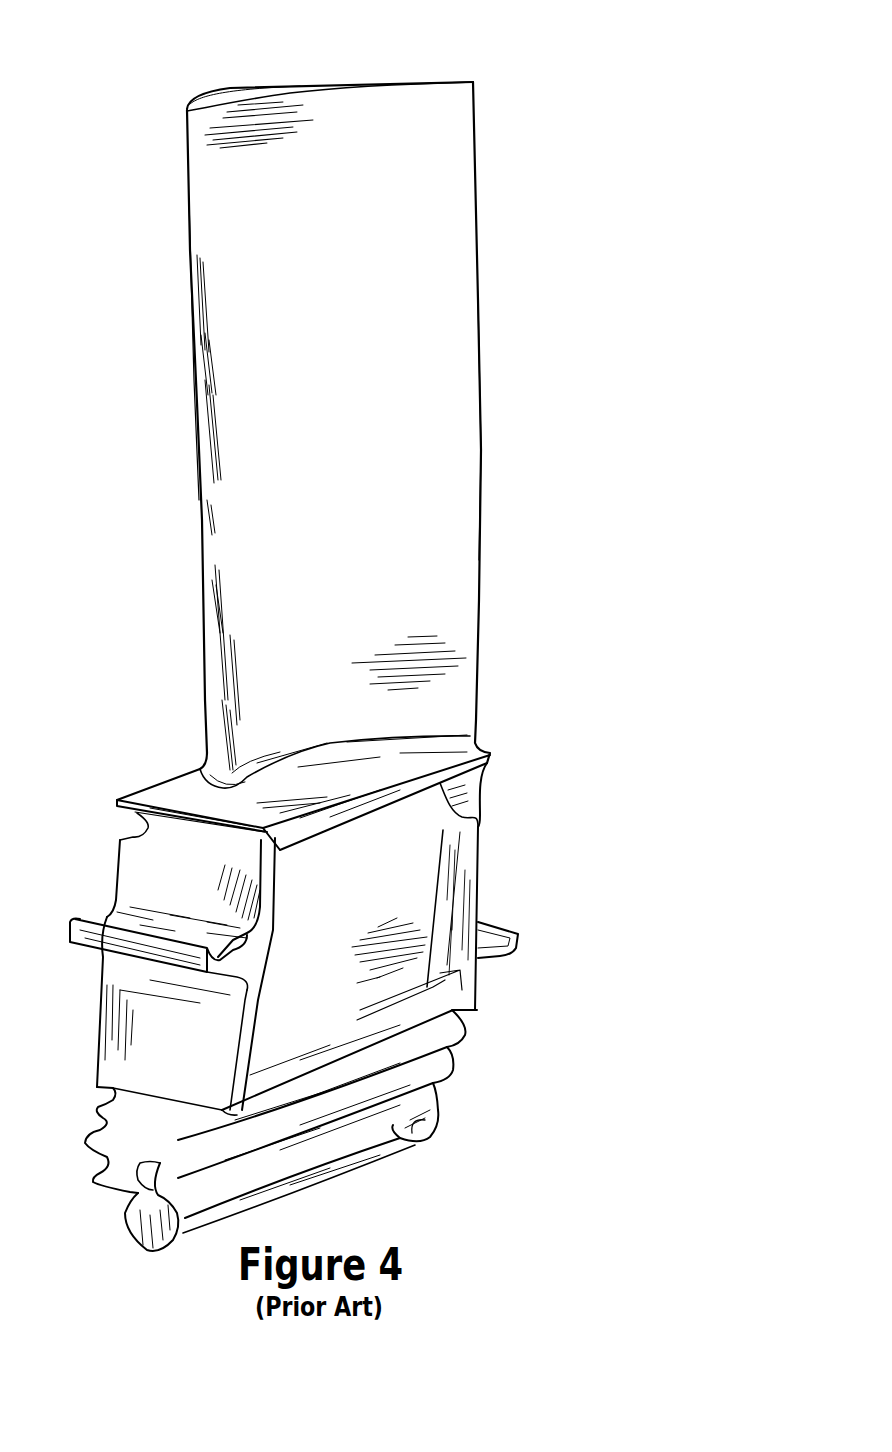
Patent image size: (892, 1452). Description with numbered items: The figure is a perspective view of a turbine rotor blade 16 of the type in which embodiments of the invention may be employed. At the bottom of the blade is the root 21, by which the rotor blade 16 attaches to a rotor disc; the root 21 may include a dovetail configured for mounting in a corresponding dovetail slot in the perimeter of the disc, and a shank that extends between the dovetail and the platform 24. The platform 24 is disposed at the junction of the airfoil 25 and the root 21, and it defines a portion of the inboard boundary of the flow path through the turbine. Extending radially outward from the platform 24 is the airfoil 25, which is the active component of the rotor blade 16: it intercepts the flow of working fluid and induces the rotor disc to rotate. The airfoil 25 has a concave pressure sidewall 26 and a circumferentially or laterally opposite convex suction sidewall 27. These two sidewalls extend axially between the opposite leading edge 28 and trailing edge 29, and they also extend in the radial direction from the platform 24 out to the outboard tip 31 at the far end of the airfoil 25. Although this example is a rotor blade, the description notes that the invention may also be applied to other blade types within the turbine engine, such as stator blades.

The turbine rotor blade 16 is at (598, 83).
The root 21 is at (506, 1039).
The platform 24 is at (195, 818).
The airfoil 25 is at (535, 272).
The concave pressure sidewall 26 is at (361, 494).
The convex suction sidewall 27 is at (490, 547).
The leading edge 28 is at (198, 407).
The trailing edge 29 is at (481, 432).
The outboard tip 31 is at (268, 94).